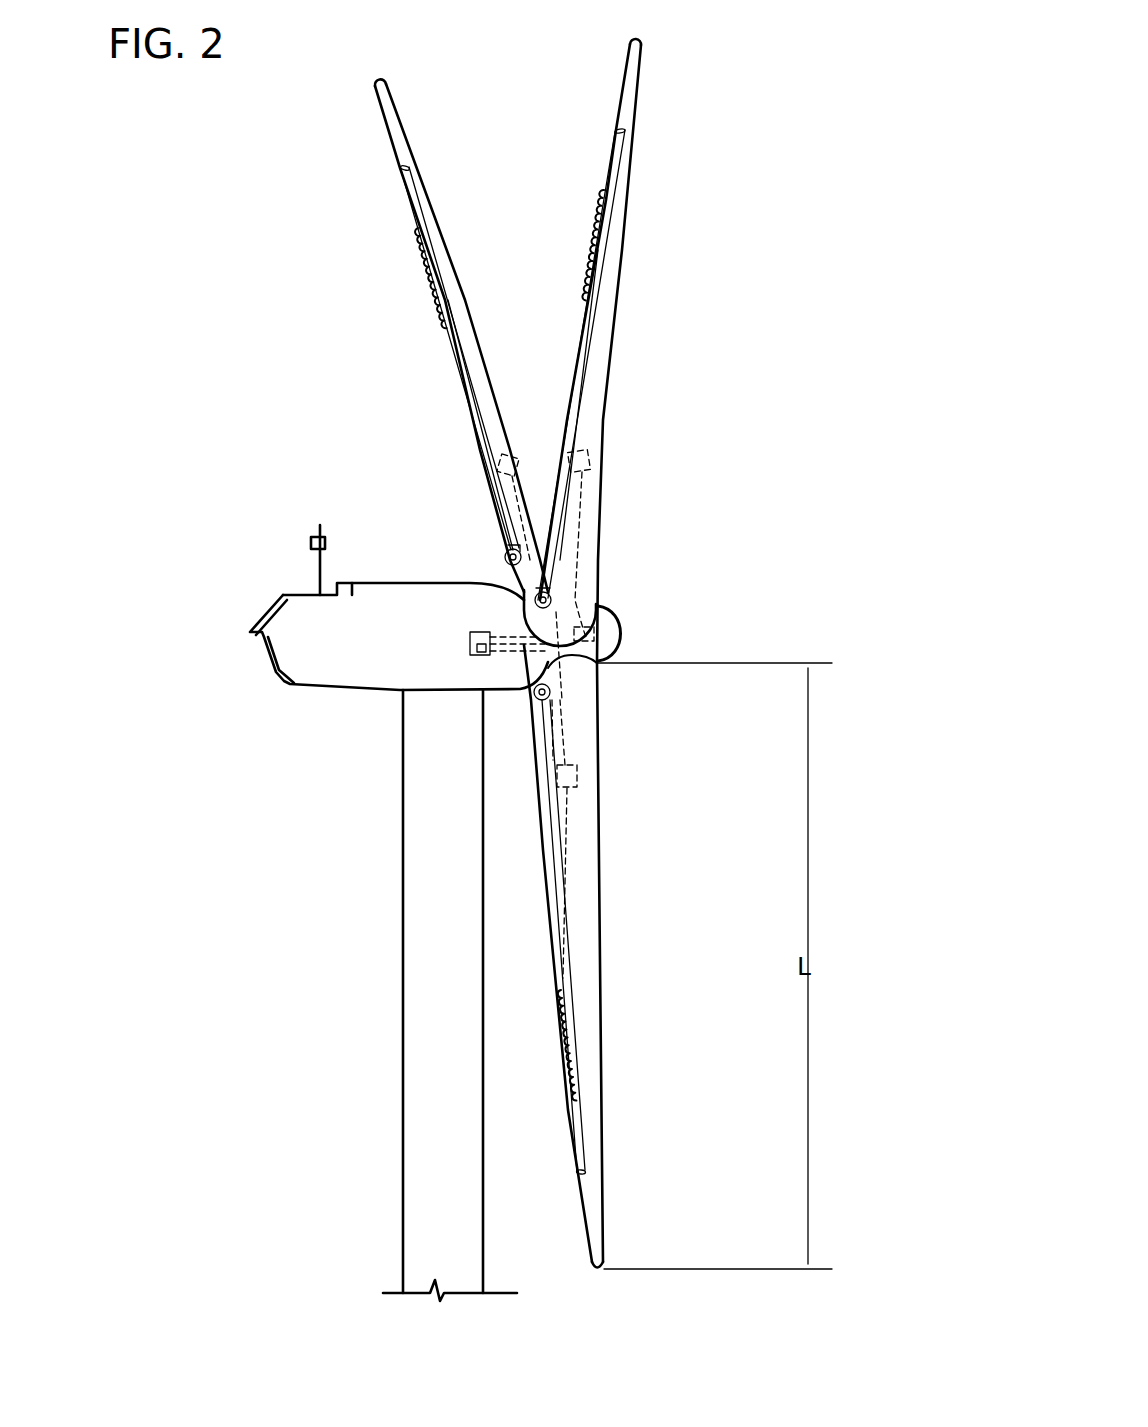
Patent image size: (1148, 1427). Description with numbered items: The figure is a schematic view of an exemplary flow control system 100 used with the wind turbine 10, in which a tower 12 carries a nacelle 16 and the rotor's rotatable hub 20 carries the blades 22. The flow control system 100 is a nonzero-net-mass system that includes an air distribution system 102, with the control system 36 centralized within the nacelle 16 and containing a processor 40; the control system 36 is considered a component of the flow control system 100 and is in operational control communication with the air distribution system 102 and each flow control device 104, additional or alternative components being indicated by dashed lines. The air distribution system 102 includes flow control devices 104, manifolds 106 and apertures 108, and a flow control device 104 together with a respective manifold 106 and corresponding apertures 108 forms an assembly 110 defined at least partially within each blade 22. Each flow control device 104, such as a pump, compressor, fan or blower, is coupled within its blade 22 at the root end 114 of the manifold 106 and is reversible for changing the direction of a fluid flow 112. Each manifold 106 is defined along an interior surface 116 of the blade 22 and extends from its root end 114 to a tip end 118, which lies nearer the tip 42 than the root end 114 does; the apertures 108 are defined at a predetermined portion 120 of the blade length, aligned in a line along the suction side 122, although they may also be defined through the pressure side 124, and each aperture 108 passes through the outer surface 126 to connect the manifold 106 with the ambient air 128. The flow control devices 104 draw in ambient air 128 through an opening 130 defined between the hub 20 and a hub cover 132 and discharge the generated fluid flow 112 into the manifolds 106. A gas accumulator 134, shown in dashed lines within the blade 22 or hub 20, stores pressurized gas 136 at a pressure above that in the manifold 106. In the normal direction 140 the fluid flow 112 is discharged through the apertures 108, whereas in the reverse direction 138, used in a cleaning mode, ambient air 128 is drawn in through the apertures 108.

The wind turbine 10 is at (728, 152).
The tower 12 is at (402, 980).
The nacelle 16 is at (318, 688).
The hub 20 is at (630, 620).
The blade 22 is at (478, 432).
The control system 36 is at (478, 636).
The processor 40 is at (485, 655).
The tip 42 is at (640, 36).
The flow control system 100 is at (770, 505).
The air distribution system 102 is at (408, 357).
The flow control device 104 is at (507, 552).
The manifold 106 is at (581, 364).
The aperture 108 is at (426, 249).
The assembly 110 is at (463, 196).
The fluid flow 112 is at (606, 222).
The root end 114 is at (534, 717).
The interior surface 116 is at (402, 162).
The tip end 118 is at (572, 1157).
The predetermined portion 120 is at (552, 992).
The suction side 122 is at (450, 292).
The pressure side 124 is at (458, 277).
The outer surface 126 is at (382, 123).
The ambient air 128 is at (776, 351).
The opening 130 is at (603, 664).
The hub cover 132 is at (614, 640).
The gas accumulator 134 is at (500, 456).
The pressurized gas 136 is at (497, 480).
The reverse direction 138 is at (564, 930).
The normal direction 140 is at (554, 832).